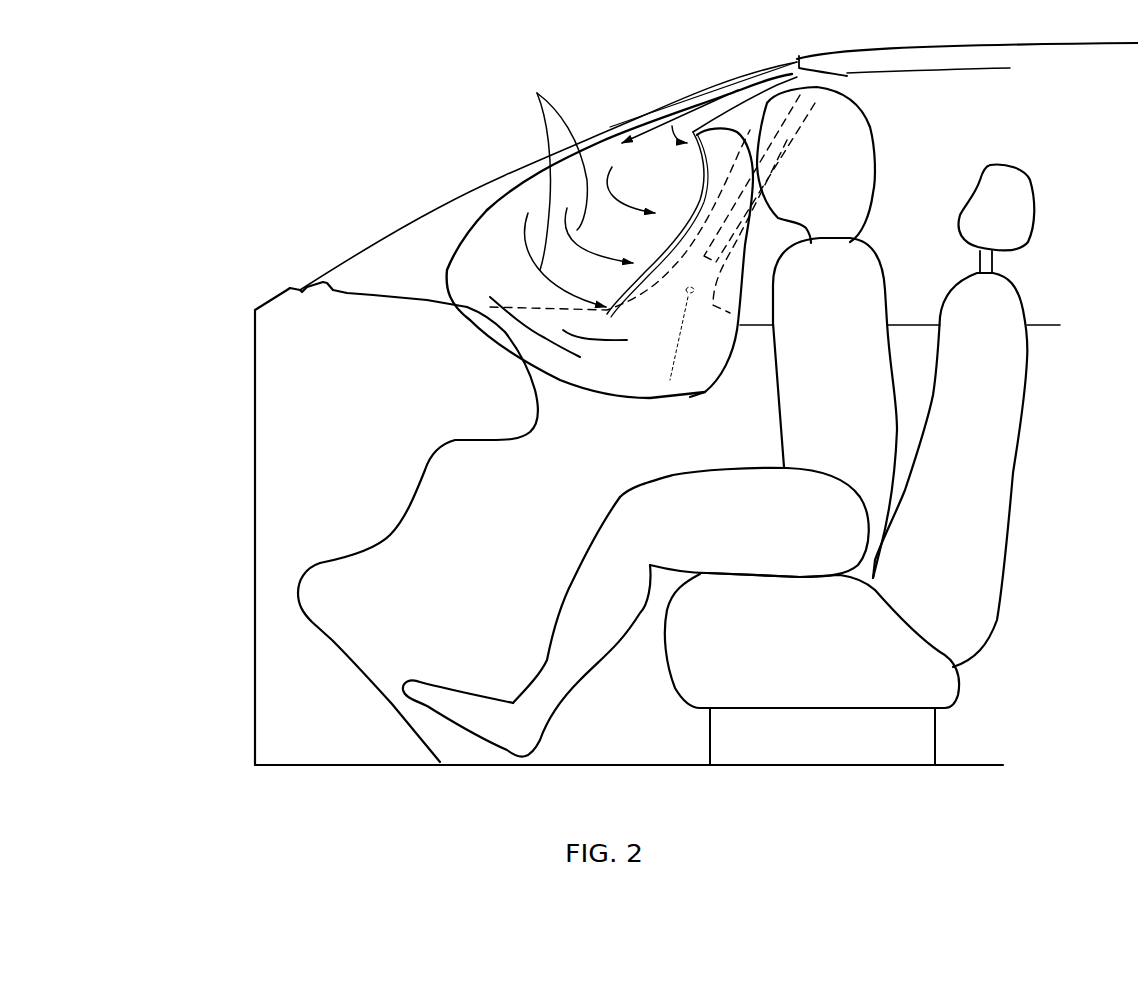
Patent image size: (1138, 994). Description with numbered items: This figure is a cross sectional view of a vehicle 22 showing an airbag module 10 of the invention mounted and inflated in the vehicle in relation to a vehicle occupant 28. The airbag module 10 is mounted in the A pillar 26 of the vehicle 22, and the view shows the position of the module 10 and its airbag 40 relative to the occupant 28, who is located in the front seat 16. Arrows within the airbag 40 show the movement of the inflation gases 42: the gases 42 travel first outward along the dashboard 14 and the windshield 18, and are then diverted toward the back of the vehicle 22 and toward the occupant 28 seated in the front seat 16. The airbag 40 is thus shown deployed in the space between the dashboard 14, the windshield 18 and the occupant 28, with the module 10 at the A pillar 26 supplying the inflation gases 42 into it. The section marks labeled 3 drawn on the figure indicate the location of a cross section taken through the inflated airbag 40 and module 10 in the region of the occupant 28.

The airbag module 10 is at (708, 88).
The dashboard 14 is at (488, 402).
The front seat 16 is at (836, 675).
The windshield 18 is at (449, 203).
The vehicle 22 is at (258, 276).
The A pillar 26 is at (847, 76).
The vehicle occupant 28 is at (893, 410).
The airbag 40 is at (487, 213).
The inflation gases 42 is at (553, 169).
The section line 3- 3 is at (733, 136).